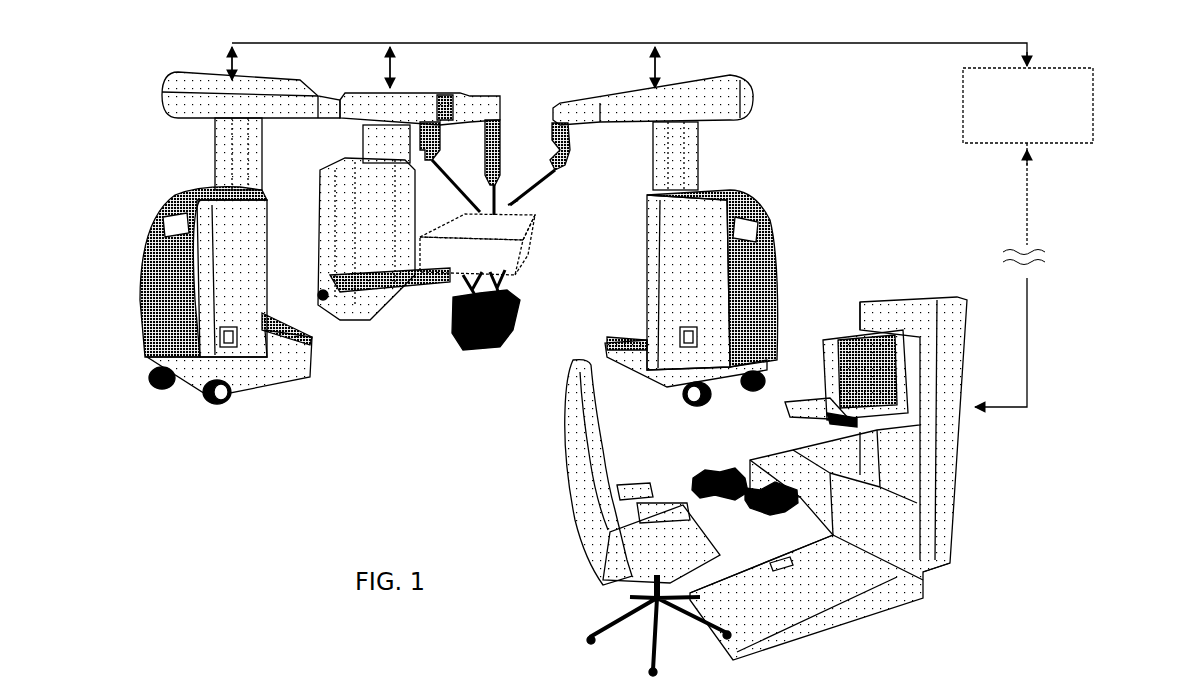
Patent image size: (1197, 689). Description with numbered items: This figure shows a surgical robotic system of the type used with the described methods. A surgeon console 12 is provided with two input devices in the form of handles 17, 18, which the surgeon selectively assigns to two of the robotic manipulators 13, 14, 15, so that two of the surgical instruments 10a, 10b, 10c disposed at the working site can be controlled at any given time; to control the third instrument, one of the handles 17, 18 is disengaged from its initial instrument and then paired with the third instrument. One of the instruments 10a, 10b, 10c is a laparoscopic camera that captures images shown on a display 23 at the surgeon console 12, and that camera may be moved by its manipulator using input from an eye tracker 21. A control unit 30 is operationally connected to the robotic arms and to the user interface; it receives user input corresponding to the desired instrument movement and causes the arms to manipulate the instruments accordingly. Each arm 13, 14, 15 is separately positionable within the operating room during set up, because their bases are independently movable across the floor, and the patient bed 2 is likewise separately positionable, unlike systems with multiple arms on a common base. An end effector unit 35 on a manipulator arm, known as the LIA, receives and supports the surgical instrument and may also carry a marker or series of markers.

The patient bed 2 is at (470, 226).
The surgical instrument 10a is at (530, 197).
The surgical instrument 10b is at (503, 155).
The surgical instrument 10c is at (440, 175).
The surgeon console 12 is at (814, 486).
The robotic manipulator 13 is at (155, 86).
The robotic manipulator 14 is at (420, 94).
The robotic manipulator 15 is at (730, 95).
The handle 17 is at (718, 466).
The handle 18 is at (728, 495).
The eye tracker 21 is at (820, 402).
The display 23 is at (845, 355).
The control unit 30 is at (1093, 88).
The end effector unit 35 is at (553, 170).